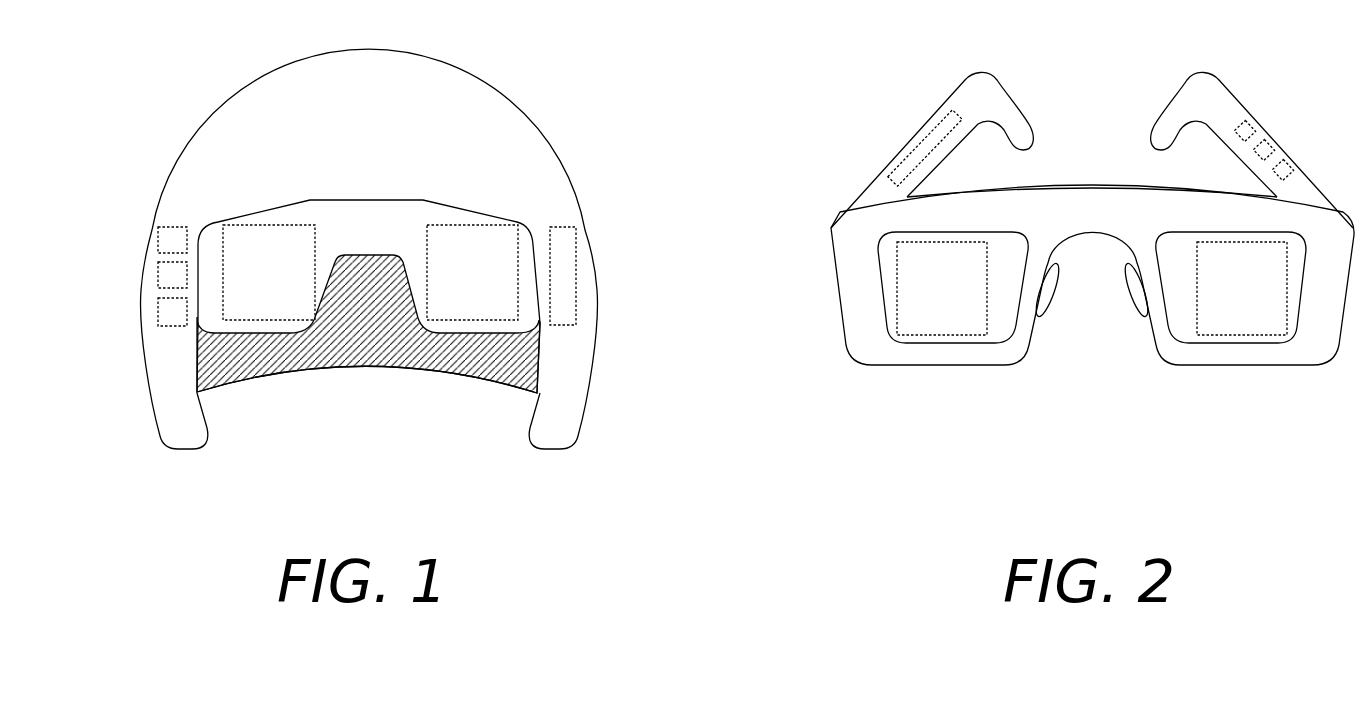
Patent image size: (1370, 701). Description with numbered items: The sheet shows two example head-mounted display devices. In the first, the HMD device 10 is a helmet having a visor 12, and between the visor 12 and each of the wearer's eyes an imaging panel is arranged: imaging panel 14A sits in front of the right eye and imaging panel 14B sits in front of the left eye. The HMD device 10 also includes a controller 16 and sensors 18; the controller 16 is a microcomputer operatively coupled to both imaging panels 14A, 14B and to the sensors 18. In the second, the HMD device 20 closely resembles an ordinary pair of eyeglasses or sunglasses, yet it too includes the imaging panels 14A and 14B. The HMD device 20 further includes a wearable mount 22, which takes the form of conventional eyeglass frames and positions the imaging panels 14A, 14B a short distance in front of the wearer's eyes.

In FIG. 1, the HMD device 10 is at (573, 90).
In FIG. 1, the visor 12 is at (272, 208).
In FIG. 1, the imaging panel 14A is at (251, 283).
In FIG. 2, the imaging panel 14A is at (926, 299).
In FIG. 1, the imaging panel 14B is at (454, 283).
In FIG. 2, the imaging panel 14B is at (1225, 299).
In FIG. 1, the controller 16 is at (577, 273).
In FIG. 2, the controller 16 is at (930, 133).
In FIG. 1, the sensors 18 is at (141, 277).
In FIG. 2, the sensors 18 is at (1276, 139).
In FIG. 2, the HMD device 20 is at (810, 375).
In FIG. 2, the wearable mount 22 is at (832, 232).